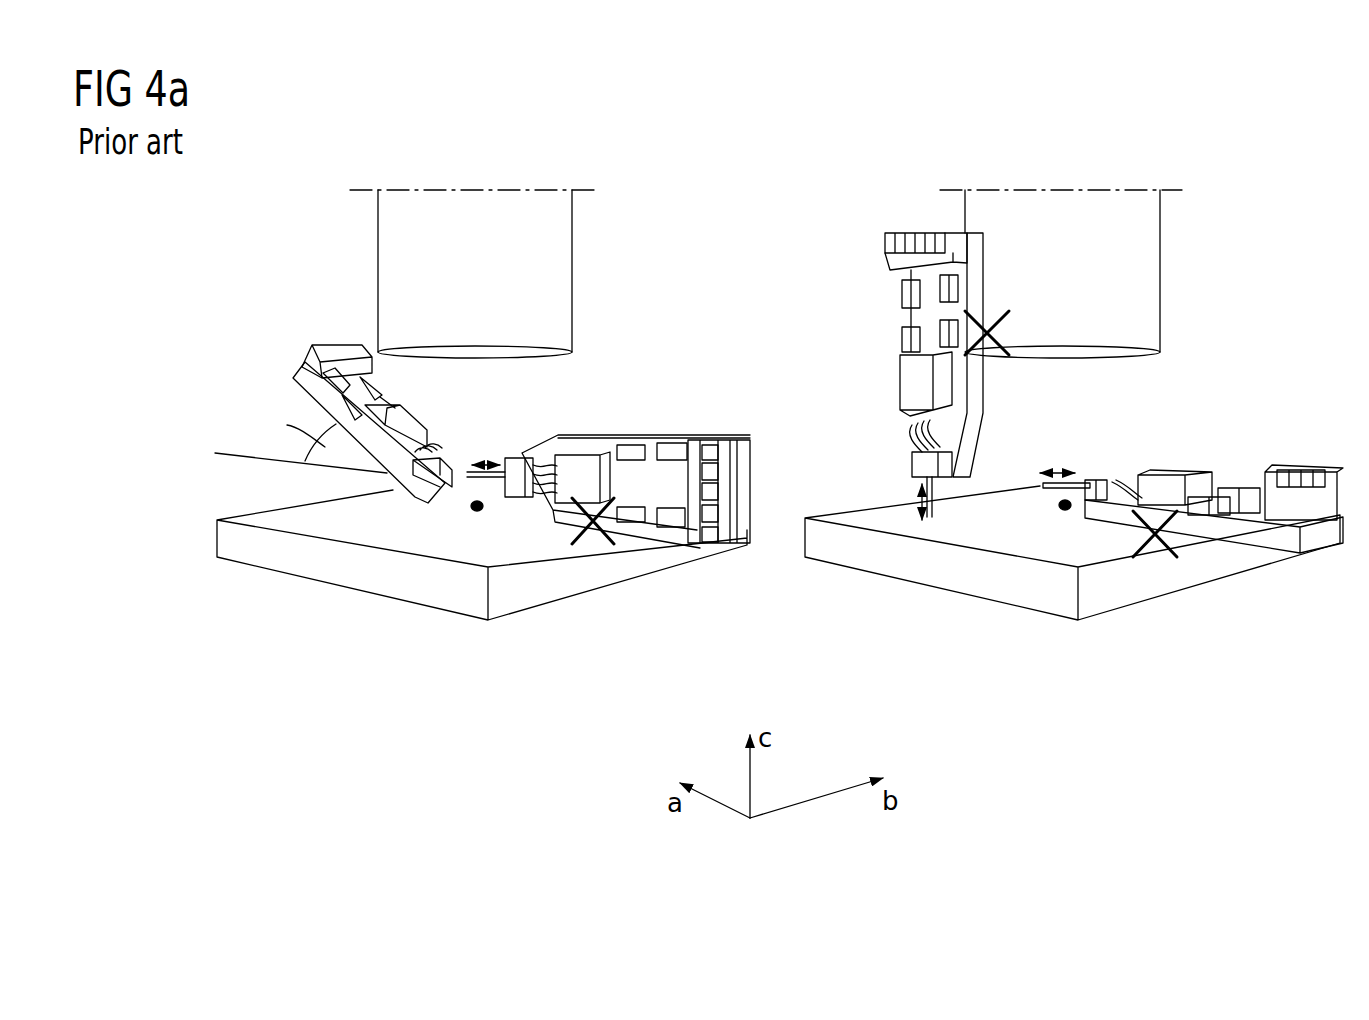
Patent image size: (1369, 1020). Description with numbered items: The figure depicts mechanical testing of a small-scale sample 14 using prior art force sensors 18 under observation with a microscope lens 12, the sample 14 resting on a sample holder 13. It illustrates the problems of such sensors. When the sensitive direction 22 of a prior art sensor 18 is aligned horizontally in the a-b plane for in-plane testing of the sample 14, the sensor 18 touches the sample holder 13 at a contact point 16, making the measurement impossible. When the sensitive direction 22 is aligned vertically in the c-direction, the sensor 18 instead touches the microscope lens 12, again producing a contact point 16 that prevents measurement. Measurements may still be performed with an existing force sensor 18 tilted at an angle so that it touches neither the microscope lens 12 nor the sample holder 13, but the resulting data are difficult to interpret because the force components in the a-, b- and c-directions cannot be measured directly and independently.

The microscope lens 12 is at (560, 243).
The sample holder 13 is at (526, 596).
The sample 14 is at (483, 508).
The contact point 16 is at (614, 538).
The prior art force sensor 18 is at (456, 436).
The sensitive direction 22 is at (455, 485).